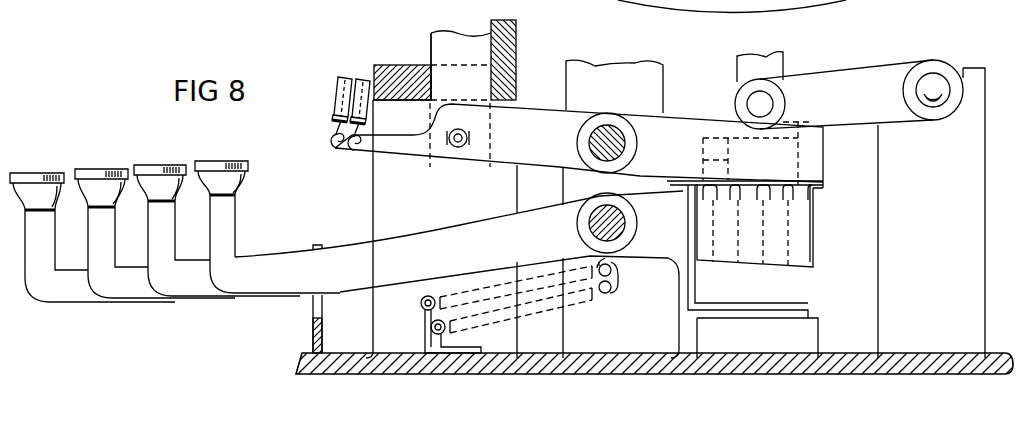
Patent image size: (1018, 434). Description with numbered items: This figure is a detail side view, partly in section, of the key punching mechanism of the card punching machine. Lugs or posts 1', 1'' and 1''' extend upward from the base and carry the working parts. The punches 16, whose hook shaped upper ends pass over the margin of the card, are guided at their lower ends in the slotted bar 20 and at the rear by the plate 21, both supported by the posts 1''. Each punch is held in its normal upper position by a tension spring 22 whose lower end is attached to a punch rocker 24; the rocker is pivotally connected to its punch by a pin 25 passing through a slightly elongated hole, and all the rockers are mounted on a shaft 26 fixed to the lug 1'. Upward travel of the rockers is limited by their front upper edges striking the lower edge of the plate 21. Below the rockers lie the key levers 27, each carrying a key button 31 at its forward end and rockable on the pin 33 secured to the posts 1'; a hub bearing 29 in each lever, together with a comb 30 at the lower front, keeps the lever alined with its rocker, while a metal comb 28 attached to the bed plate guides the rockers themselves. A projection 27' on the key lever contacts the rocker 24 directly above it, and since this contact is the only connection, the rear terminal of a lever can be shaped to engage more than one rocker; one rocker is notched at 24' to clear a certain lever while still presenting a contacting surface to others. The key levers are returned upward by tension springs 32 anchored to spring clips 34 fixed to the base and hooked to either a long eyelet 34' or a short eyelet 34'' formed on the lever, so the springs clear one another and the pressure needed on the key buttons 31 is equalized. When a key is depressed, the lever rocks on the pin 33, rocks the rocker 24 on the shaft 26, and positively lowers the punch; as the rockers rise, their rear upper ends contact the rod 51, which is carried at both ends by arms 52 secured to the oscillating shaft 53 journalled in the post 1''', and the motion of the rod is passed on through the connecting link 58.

The punches 16 is at (431, 38).
The slotted bar 20 is at (397, 65).
The plate 21 is at (517, 40).
The tension springs 22 is at (337, 97).
The lug 1' is at (617, 73).
The posts 1'' is at (454, 194).
The posts 1''' is at (942, 213).
The punch rockers 24 is at (579, 140).
The notch 24' is at (735, 153).
The pins 25 is at (457, 149).
The shaft 26 is at (588, 143).
The key levers 27 is at (459, 274).
The projection 27' is at (729, 223).
The metal comb 28 is at (690, 287).
The hub bearing 29 is at (578, 228).
The comb 30 is at (313, 334).
The key buttons 31 is at (88, 175).
The tension springs 32 is at (572, 297).
The pin 33 is at (627, 231).
The spring clips 34 is at (438, 324).
The long eyelet 34' is at (617, 290).
The short eyelet 34'' is at (626, 282).
The rod 51 is at (752, 98).
The arms 52 is at (856, 80).
The oscillating shaft 53 is at (937, 80).
The connecting link 58 is at (783, 56).